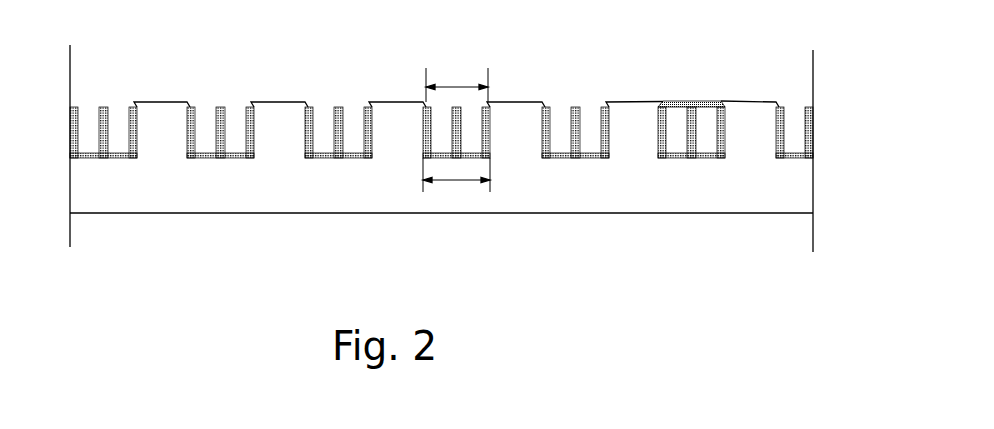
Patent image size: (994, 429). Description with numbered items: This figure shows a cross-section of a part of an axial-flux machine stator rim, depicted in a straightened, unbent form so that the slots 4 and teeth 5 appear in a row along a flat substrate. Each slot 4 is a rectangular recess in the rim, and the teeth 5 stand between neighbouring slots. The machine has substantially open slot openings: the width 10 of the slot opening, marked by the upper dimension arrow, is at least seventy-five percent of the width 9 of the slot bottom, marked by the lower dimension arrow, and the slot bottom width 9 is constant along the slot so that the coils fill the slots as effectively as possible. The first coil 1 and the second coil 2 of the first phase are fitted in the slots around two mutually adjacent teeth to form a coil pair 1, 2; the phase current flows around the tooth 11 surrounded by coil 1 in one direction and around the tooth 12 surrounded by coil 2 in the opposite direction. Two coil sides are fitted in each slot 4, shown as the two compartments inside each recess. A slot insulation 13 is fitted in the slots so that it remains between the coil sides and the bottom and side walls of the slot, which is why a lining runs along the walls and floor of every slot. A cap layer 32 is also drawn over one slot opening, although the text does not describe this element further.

The first coil 1 is at (115, 118).
The second coil 2 is at (233, 147).
The slot 4 is at (685, 137).
The tooth 5 is at (738, 117).
The width of the slot bottom 9 is at (452, 180).
The width of the slot opening 10 is at (443, 83).
The tooth surrounded by coil 1 11 is at (153, 143).
The tooth surrounded by coil 2 12 is at (273, 115).
The slot insulation 13 is at (547, 117).
The cap layer 32 is at (670, 102).